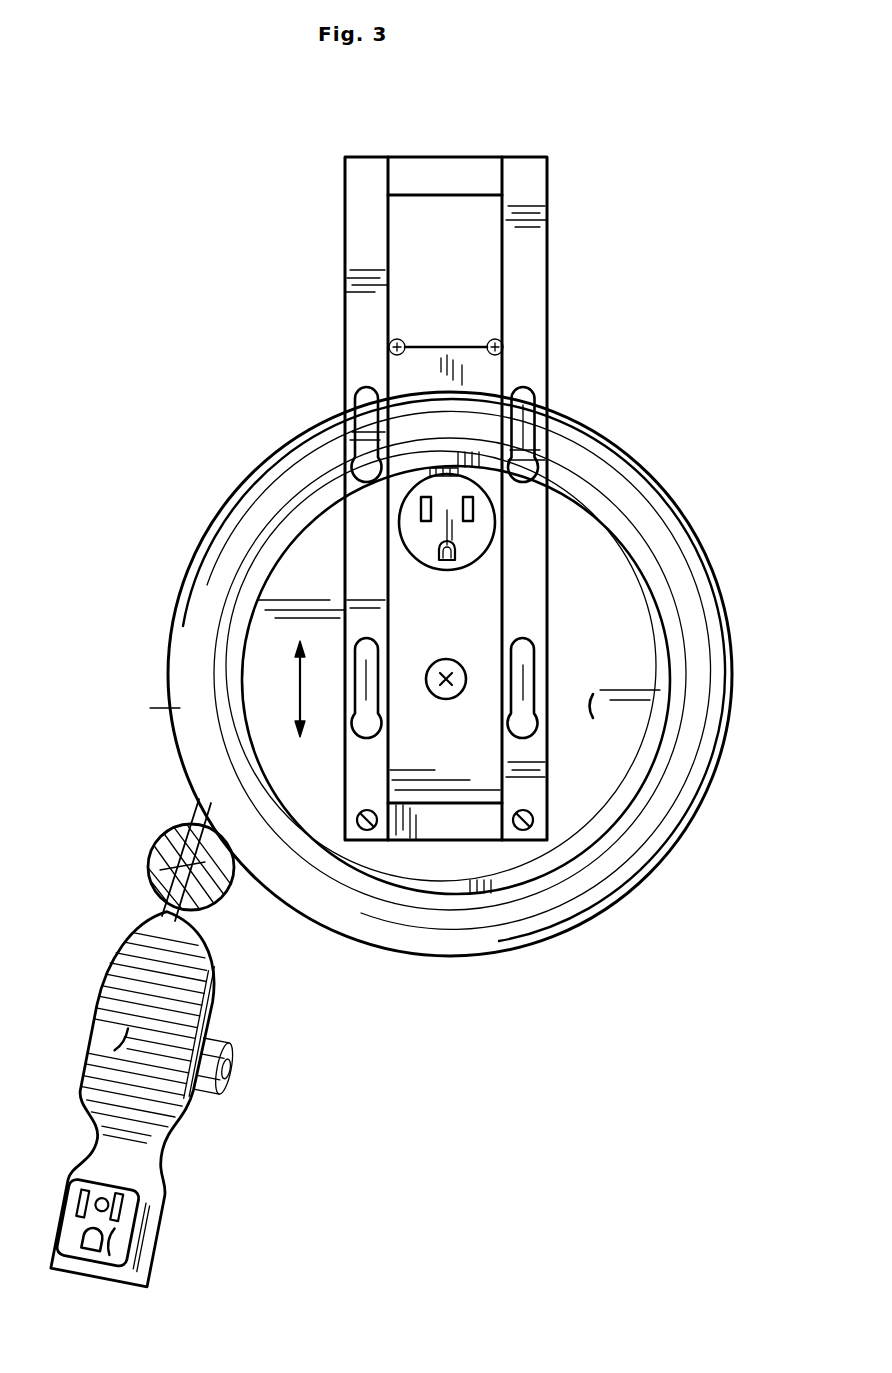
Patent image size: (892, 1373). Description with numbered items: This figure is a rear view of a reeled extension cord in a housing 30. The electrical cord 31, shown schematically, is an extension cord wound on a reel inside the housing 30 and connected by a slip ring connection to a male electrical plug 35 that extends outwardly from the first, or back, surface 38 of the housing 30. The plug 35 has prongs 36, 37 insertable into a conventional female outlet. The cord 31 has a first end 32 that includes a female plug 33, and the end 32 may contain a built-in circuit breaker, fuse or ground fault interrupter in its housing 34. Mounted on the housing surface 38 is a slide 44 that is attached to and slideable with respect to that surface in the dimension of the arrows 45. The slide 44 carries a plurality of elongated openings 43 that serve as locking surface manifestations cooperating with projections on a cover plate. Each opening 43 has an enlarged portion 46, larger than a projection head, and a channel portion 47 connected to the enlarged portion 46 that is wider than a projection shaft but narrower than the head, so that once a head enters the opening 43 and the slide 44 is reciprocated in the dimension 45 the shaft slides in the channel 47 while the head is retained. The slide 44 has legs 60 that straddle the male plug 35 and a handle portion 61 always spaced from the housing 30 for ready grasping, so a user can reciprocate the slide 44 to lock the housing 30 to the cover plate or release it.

The housing 30 is at (732, 496).
The electrical cord 31 is at (147, 867).
The first end 32 is at (154, 1047).
The female plug 33 is at (118, 1238).
The housing 34 is at (90, 1036).
The male electrical plug 35 is at (424, 478).
The prongs 36 is at (421, 510).
The prong 37 is at (438, 553).
The first surface 38 is at (594, 708).
The elongated openings 43 is at (340, 392).
The slide 44 is at (580, 230).
The arrows 45 is at (296, 690).
The enlarged portion 46 is at (362, 736).
The channel portion 47 is at (527, 653).
The legs 60 is at (362, 232).
The handle portion 61 is at (425, 175).